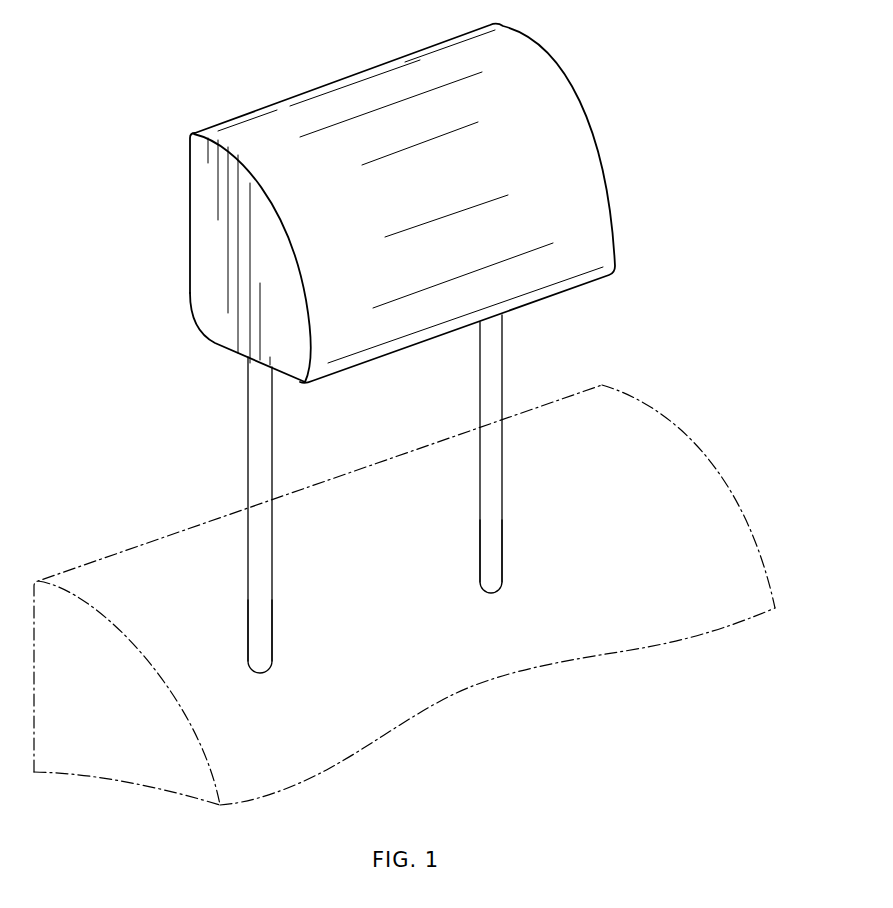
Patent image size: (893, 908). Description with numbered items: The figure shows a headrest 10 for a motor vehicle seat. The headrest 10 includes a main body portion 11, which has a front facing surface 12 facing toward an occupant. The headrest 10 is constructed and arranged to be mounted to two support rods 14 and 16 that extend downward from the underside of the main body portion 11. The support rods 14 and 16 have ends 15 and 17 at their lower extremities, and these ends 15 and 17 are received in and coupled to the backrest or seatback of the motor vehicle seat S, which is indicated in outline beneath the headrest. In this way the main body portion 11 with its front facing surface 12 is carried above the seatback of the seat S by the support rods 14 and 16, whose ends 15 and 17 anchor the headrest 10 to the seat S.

The headrest 10 is at (380, 203).
The main body portion 11 is at (587, 153).
The front facing surface 12 is at (375, 215).
The support rod 14 is at (247, 515).
The end of support rod 15 is at (263, 622).
The support rod 16 is at (537, 459).
The end of support rod 17 is at (494, 560).
The motor vehicle seat S is at (475, 675).